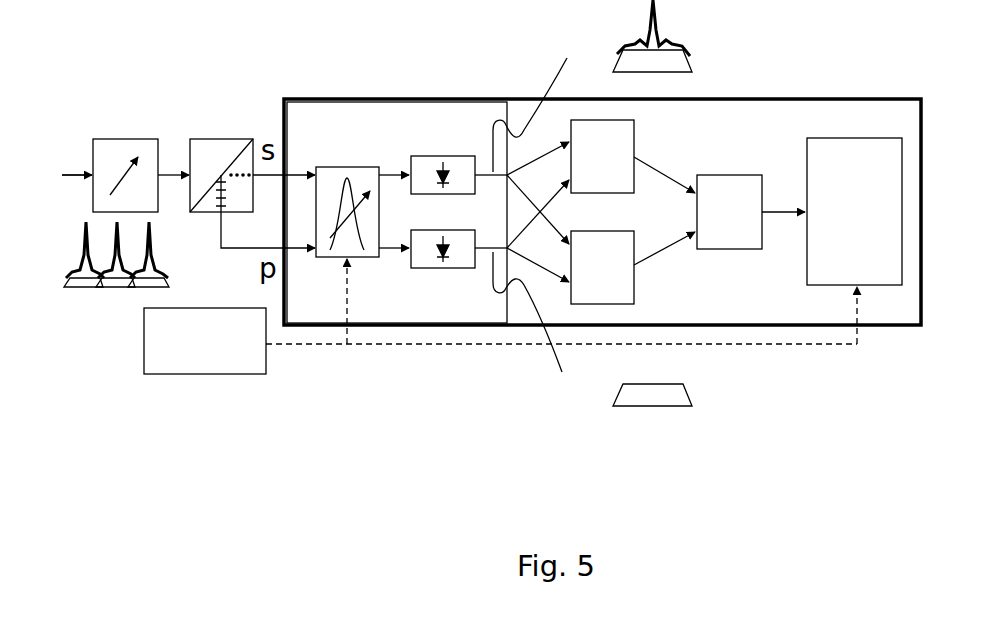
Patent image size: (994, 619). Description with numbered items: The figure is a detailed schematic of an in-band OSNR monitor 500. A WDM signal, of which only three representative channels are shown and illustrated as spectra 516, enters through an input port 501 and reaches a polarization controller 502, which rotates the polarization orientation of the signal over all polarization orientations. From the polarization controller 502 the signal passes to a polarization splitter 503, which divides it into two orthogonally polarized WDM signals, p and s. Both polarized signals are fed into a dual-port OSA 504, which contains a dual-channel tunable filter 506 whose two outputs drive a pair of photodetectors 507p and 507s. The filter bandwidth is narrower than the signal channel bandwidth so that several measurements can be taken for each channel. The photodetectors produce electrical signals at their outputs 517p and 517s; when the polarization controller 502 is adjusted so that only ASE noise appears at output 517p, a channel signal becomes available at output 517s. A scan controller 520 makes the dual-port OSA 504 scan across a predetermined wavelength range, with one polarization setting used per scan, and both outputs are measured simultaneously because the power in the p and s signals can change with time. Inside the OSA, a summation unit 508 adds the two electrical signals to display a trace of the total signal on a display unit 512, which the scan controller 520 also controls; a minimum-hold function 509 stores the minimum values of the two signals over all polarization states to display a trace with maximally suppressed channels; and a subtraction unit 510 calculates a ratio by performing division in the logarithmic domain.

The in-band OSNR monitor 500 is at (334, 399).
The input port 501 is at (77, 174).
The polarization controller 502 is at (137, 138).
The polarization splitter 503 is at (220, 139).
The dual-port OSA 504 is at (344, 97).
The dual-channel tunable filter 506 is at (364, 160).
The photodetector 507s is at (433, 156).
The photodetector 507p is at (450, 268).
The summation unit 508 is at (602, 156).
The minimum-hold function 509 is at (602, 267).
The subtraction unit 510 is at (729, 212).
The display unit 512 is at (854, 211).
The input spectra 516 is at (113, 298).
The photodetector output 517s is at (592, 86).
The photodetector output 517p is at (592, 331).
The scan controller 520 is at (500, 316).